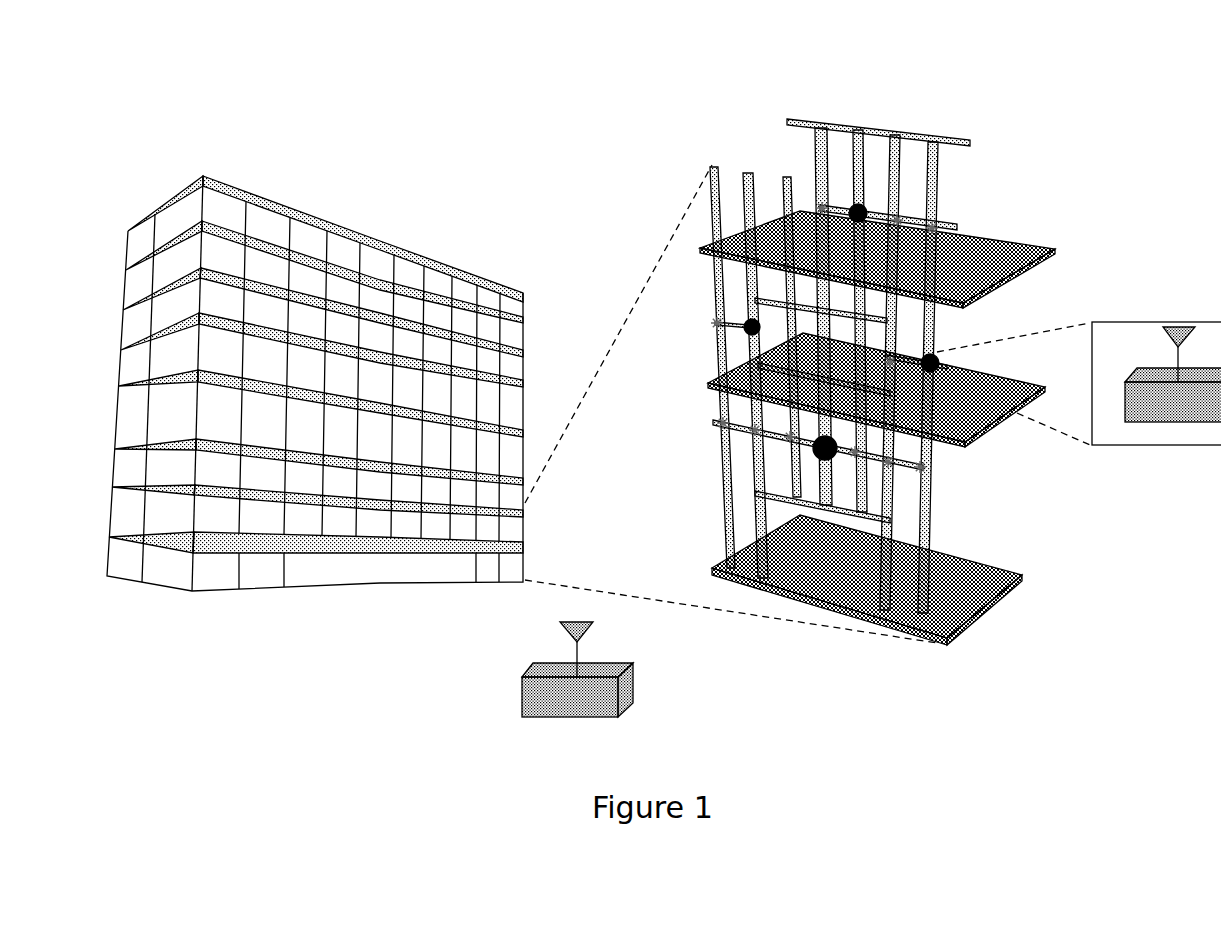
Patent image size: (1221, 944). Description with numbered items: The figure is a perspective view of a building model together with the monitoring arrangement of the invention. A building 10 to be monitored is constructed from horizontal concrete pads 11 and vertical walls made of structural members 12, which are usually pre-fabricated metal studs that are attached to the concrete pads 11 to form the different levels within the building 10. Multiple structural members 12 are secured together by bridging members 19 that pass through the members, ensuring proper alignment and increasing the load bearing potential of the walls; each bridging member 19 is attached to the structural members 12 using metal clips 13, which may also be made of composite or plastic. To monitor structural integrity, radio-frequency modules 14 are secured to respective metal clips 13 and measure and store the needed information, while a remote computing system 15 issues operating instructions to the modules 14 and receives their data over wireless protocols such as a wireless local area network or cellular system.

The building 10 is at (320, 213).
The concrete pad 11 is at (970, 272).
The structural member 12 is at (785, 173).
The metal clip 13 is at (828, 198).
The radio-frequency module 14 is at (1156, 383).
The remote computing system 15 is at (577, 669).
The bridging member 19 is at (957, 227).